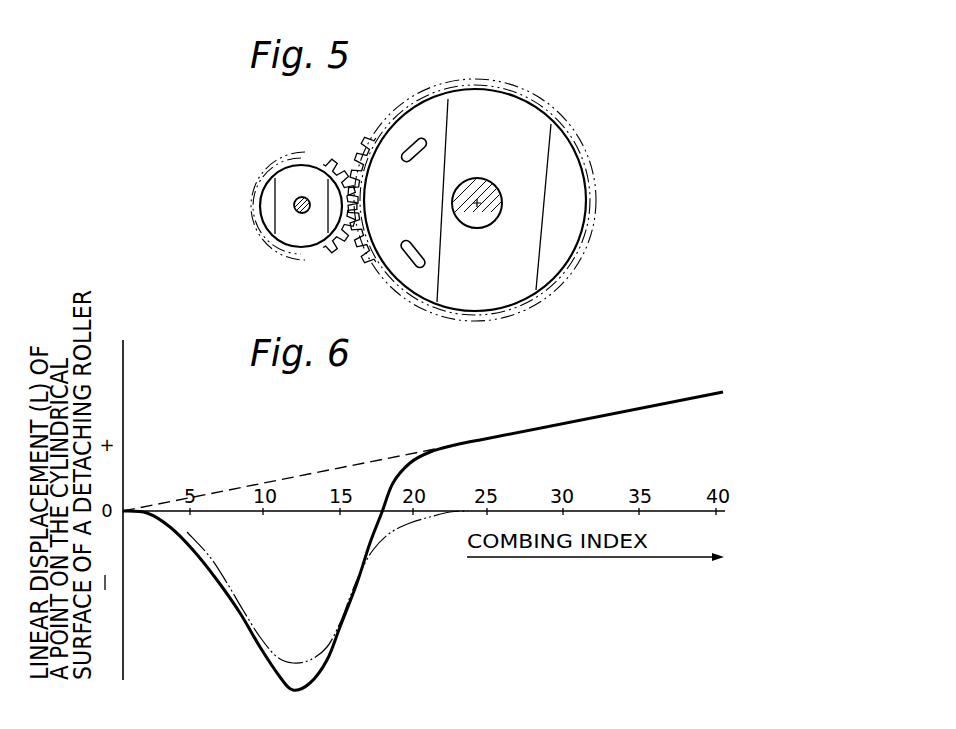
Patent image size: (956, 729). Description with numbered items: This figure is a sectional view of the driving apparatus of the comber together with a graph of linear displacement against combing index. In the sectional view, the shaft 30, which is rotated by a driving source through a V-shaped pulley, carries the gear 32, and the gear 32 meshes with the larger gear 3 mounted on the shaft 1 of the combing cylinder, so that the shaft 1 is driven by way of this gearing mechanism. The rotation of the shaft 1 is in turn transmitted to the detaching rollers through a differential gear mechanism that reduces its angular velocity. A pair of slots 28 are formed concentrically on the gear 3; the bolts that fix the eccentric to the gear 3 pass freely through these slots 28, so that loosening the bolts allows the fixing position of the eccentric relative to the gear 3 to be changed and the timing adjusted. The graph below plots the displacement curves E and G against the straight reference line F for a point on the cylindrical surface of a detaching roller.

In FIG. 5, the gear 3 is at (529, 115).
In FIG. 5, the shaft 1 is at (491, 190).
In FIG. 5, the slots 28 is at (418, 160).
In FIG. 5, the shaft 30 is at (302, 197).
In FIG. 5, the gear 32 is at (268, 190).
In FIG. 6, the displacement curve E is at (358, 543).
In FIG. 6, the linear reference line F is at (388, 456).
In FIG. 6, the displacement curve G is at (387, 547).